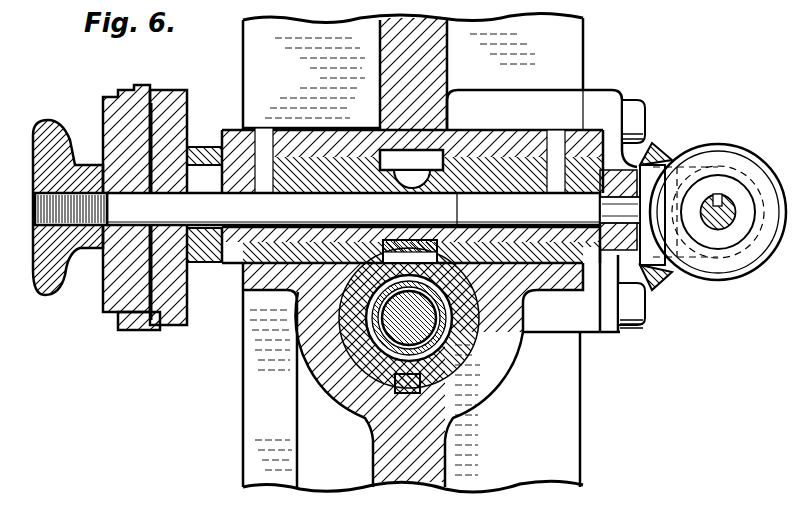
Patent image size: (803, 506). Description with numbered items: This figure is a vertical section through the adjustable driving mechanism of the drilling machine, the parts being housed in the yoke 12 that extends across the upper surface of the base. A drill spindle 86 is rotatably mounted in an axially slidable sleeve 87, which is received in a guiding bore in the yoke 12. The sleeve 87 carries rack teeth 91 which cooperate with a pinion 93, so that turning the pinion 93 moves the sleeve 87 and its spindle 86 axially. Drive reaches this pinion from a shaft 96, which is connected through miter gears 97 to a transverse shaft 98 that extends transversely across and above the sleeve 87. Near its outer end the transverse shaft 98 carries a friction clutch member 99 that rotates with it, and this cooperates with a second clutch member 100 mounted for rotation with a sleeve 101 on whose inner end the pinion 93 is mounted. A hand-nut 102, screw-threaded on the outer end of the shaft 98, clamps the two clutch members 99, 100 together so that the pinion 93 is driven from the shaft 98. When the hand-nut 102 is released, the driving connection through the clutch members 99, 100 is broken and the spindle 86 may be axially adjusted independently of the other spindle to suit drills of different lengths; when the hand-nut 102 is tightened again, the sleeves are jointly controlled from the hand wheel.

The yoke 12 is at (583, 50).
The spindle 86 is at (390, 327).
The sleeve 87 is at (455, 350).
The rack teeth 91 is at (395, 260).
The pinion 93 is at (420, 167).
The shaft 96 is at (718, 232).
The miter gears 97 is at (710, 148).
The transverse shaft 98 is at (337, 209).
The friction clutch member 99 is at (103, 310).
The second clutch member 100 is at (140, 332).
The sleeve 101 is at (213, 232).
The hand-nut 102 is at (48, 123).